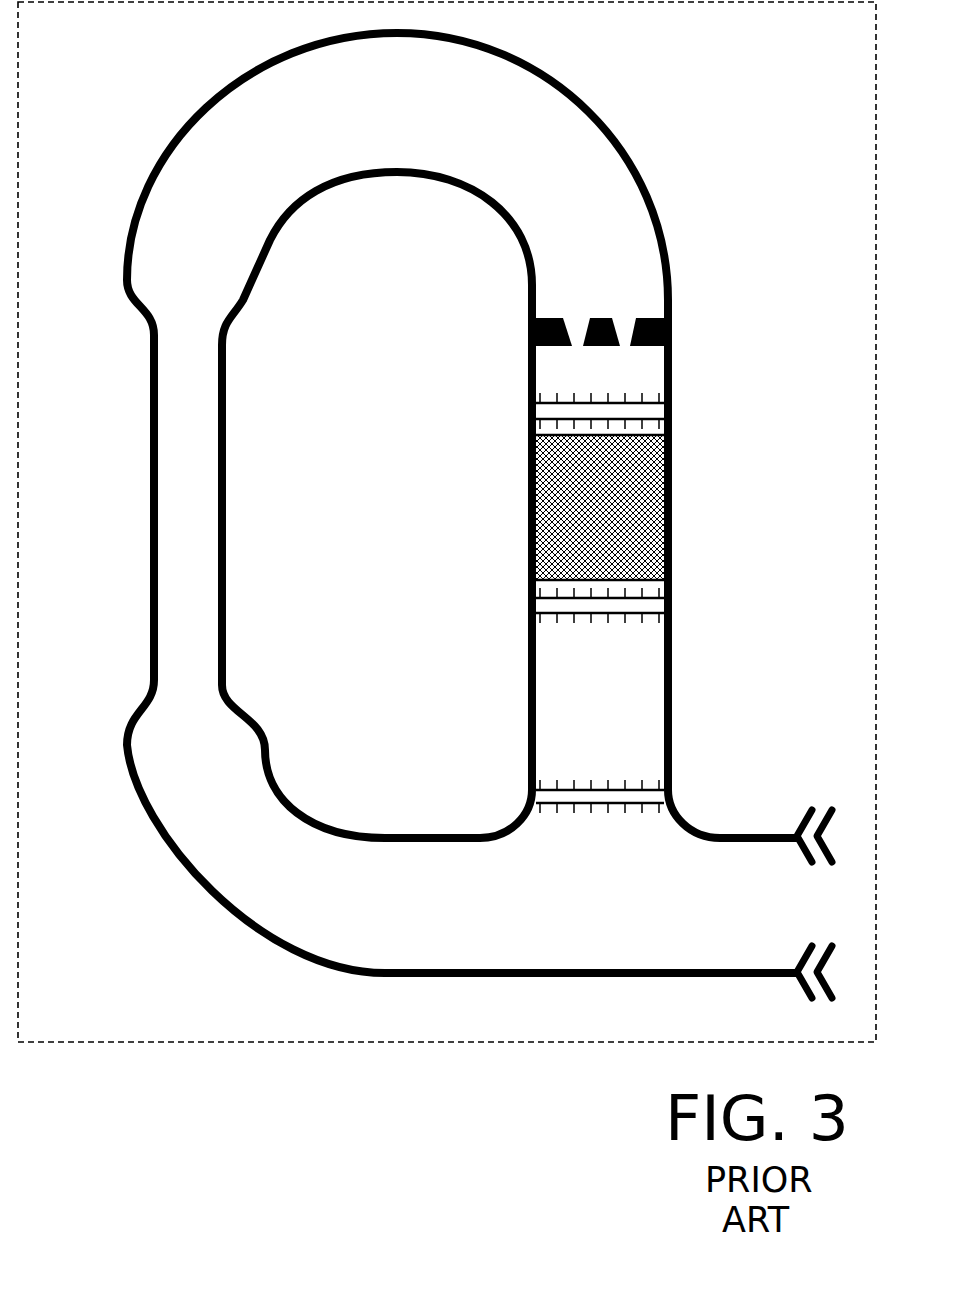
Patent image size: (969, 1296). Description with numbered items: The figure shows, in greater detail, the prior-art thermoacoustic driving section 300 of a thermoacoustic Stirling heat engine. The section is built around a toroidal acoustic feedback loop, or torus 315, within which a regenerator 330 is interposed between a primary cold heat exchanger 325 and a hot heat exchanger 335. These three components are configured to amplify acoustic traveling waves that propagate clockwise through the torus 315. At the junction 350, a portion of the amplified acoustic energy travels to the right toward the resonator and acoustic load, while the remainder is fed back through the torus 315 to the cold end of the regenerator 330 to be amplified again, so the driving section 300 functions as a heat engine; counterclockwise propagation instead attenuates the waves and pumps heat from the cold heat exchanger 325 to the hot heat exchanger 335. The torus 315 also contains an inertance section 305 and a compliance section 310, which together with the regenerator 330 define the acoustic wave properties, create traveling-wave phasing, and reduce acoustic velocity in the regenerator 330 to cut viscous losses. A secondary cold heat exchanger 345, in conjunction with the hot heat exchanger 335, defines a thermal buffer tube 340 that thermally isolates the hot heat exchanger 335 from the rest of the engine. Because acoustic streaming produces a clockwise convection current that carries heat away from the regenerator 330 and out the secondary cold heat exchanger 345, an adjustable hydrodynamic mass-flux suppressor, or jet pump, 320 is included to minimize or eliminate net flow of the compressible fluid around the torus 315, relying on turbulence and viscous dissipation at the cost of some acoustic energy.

The thermoacoustic driving section 300 is at (58, 29).
The inertance section 305 is at (162, 527).
The compliance section 310 is at (470, 108).
The toroidal acoustic feedback loop 315 is at (673, 268).
The hydrodynamic mass-flux suppressor 320 is at (673, 337).
The primary cold heat exchanger 325 is at (673, 402).
The regenerator 330 is at (673, 505).
The hot heat exchanger 335 is at (673, 605).
The thermal buffer tube 340 is at (558, 720).
The secondary cold heat exchanger 345 is at (673, 787).
The junction 350 is at (575, 896).